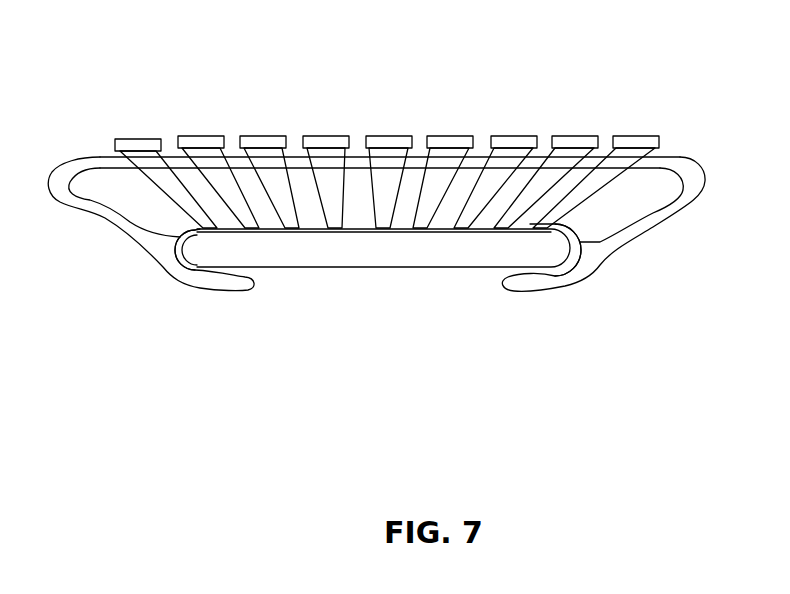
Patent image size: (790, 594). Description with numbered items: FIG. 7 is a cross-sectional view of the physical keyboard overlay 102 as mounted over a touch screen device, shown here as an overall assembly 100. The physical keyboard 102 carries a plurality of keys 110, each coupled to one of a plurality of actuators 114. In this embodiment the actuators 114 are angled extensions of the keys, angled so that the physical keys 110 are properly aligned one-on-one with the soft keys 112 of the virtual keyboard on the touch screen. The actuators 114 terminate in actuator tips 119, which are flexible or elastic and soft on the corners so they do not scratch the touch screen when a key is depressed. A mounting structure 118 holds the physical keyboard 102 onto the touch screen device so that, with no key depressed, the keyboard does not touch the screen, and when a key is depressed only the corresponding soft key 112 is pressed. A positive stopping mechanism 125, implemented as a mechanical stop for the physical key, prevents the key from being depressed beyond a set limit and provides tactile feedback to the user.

The heat sink assembly 100 is at (373, 185).
The physical keyboard overlay 102 is at (373, 199).
The keys 110 is at (384, 135).
The soft keys 112 is at (383, 276).
The actuators 114 is at (118, 177).
The mounting structure 118 is at (584, 257).
The actuator tips 119 is at (298, 232).
The positive stopping mechanism 125 is at (102, 158).